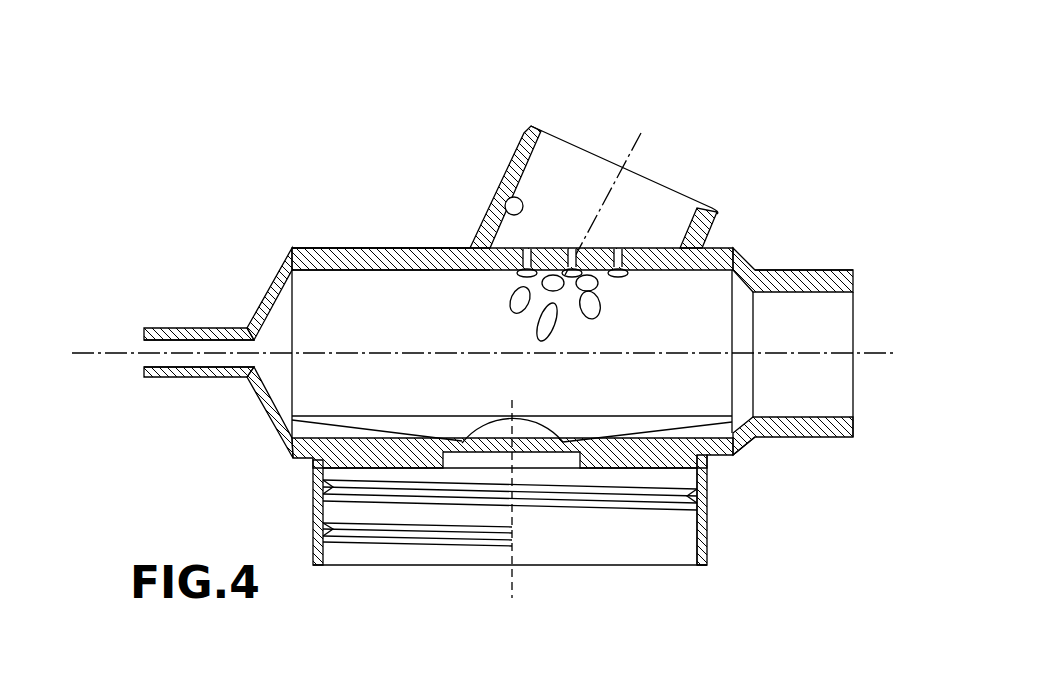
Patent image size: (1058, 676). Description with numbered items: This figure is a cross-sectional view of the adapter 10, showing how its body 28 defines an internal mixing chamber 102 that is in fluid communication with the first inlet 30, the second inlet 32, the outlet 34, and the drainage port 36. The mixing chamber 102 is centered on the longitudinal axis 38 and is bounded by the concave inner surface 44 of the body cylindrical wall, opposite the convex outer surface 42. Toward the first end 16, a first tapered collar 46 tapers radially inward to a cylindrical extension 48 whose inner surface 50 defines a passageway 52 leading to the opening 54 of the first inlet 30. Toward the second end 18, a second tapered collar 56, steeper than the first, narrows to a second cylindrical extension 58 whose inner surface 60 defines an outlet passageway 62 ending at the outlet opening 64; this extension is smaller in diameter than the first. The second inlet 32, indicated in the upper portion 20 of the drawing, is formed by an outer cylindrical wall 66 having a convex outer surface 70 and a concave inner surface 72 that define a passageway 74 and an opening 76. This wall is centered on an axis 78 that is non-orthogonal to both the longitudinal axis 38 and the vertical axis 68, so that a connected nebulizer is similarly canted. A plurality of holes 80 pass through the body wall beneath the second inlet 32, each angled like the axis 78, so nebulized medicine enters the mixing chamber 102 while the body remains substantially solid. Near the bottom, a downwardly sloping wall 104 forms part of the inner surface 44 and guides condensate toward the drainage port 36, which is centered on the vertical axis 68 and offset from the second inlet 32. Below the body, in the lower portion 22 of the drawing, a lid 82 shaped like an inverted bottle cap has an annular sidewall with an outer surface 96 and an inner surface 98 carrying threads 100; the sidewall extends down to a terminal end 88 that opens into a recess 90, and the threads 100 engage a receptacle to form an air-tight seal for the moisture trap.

The adapter 10 is at (748, 126).
The first end 16 is at (866, 284).
The second end 18 is at (108, 342).
The side port 20 is at (564, 76).
The cap 22 is at (638, 590).
The body 28 is at (325, 246).
The first inlet 30 is at (858, 386).
The second inlet 32 is at (597, 137).
The outlet 34 is at (140, 367).
The drainage port 36 is at (535, 428).
The longitudinal axis 38 is at (472, 352).
The outer surface 42 is at (379, 247).
The inner surface 44 is at (332, 272).
The first tapered collar 46 is at (745, 265).
The cylindrical extension 48 is at (815, 265).
The inner surface 50 is at (813, 410).
The passageway 52 is at (813, 306).
The opening 54 is at (845, 313).
The second tapered collar 56 is at (265, 293).
The second cylindrical extension 58 is at (207, 328).
The inner surface 60 is at (167, 340).
The outlet passageway 62 is at (194, 360).
The outlet opening 64 is at (143, 350).
The outer cylindrical wall 66 is at (503, 162).
The vertical axis 68 is at (512, 588).
The convex outer surface 70 is at (508, 197).
The concave inner surface 72 is at (502, 210).
The passageway 74 is at (552, 176).
The opening 76 is at (660, 192).
The axis 78 is at (630, 163).
The holes 80 is at (622, 275).
The lid 82 is at (312, 497).
The terminal end 88 is at (703, 566).
The recess 90 is at (578, 542).
The outer surface 96 is at (708, 523).
The inner surface 98 is at (697, 538).
The threads 100 is at (420, 540).
The mixing chamber 102 is at (403, 305).
The sloping wall 104 is at (425, 418).